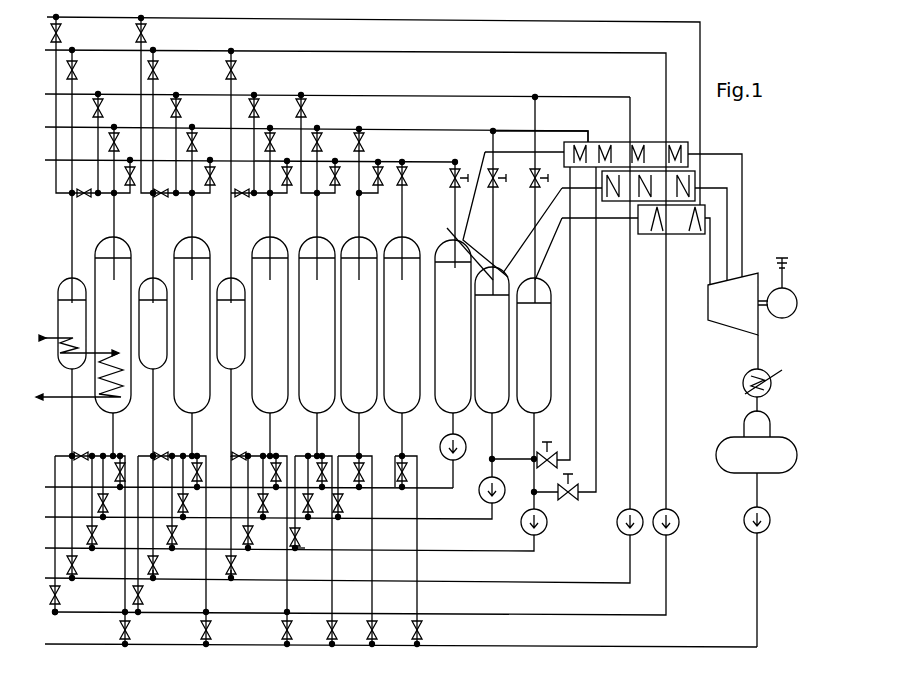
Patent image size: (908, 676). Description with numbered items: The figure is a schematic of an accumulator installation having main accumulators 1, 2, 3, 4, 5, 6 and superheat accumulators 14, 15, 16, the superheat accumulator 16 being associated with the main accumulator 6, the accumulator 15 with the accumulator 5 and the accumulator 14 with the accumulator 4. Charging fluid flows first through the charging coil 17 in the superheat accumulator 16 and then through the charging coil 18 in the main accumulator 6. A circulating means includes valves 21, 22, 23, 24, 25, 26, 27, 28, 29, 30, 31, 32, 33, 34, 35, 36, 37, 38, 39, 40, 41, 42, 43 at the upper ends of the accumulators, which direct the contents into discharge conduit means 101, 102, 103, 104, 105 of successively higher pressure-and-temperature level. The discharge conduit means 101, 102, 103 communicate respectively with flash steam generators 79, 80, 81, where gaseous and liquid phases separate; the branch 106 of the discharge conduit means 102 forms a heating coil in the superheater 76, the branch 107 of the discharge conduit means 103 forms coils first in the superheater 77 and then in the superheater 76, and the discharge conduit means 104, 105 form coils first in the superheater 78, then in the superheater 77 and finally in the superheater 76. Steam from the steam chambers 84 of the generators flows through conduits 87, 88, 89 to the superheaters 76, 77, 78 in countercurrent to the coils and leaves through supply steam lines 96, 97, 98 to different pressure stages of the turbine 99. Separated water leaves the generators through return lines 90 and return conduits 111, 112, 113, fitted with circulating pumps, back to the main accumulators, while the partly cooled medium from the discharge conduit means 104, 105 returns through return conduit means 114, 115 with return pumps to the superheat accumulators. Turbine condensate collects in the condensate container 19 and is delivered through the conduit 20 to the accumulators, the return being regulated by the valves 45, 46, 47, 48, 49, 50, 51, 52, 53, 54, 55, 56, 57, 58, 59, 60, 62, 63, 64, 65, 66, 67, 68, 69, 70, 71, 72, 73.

The main accumulator 1 is at (402, 316).
The main accumulator 2 is at (360, 316).
The main accumulator 3 is at (318, 316).
The main accumulator 4 is at (264, 316).
The main accumulator 5 is at (188, 310).
The main accumulator 6 is at (108, 310).
The superheat accumulator 14 is at (232, 323).
The superheat accumulator 15 is at (153, 323).
The superheat accumulator 16 is at (68, 284).
The charging coil 17 is at (79, 323).
The charging coil 18 is at (112, 348).
The condensate container 19 is at (728, 452).
The conduit 20 is at (744, 648).
The valve 21 is at (404, 167).
The valve 22 is at (360, 133).
The valve 23 is at (304, 103).
The valve 24 is at (244, 71).
The valve 25 is at (146, 33).
The valve 26 is at (379, 167).
The valve 27 is at (318, 133).
The valve 28 is at (258, 103).
The valve 29 is at (249, 206).
The valve 30 is at (158, 70).
The valve 31 is at (77, 70).
The valve 32 is at (336, 167).
The valve 33 is at (272, 135).
The valve 34 is at (180, 103).
The valve 35 is at (170, 206).
The valve 36 is at (61, 33).
The valve 37 is at (288, 167).
The valve 38 is at (195, 135).
The valve 39 is at (101, 103).
The valve 40 is at (86, 198).
The valve 41 is at (210, 167).
The valve 42 is at (117, 134).
The valve 43 is at (130, 167).
The valve 45 is at (400, 482).
The valve 46 is at (342, 505).
The valve 47 is at (297, 550).
The valve 48 is at (230, 572).
The valve 49 is at (143, 595).
The valve 50 is at (403, 632).
The valve 51 is at (362, 463).
The valve 52 is at (311, 503).
The valve 53 is at (257, 518).
The valve 54 is at (241, 454).
The valve 55 is at (156, 572).
The valve 56 is at (60, 595).
The valve 57 is at (359, 632).
The valve 58 is at (323, 463).
The valve 59 is at (264, 518).
The valve 60 is at (177, 518).
The valve 62 is at (77, 571).
The valve 63 is at (318, 632).
The valve 64 is at (277, 463).
The valve 65 is at (184, 518).
The valve 66 is at (95, 518).
The valve 67 is at (82, 454).
The valve 68 is at (272, 632).
The valve 69 is at (199, 463).
The valve 70 is at (108, 518).
The valve 71 is at (194, 632).
The valve 72 is at (122, 463).
The valve 73 is at (110, 632).
The superheater 76 is at (686, 142).
The superheater 77 is at (612, 203).
The superheater 78 is at (671, 234).
The flash steam generator 79 is at (458, 310).
The flash steam generator 80 is at (494, 337).
The steam generator 81 is at (536, 337).
The steam chamber 84 is at (460, 246).
The conduit 87 is at (470, 208).
The conduit 88 is at (548, 205).
The conduit 89 is at (556, 230).
The return line 90 is at (532, 445).
The supply steam line 96 is at (740, 263).
The supply steam line 97 is at (727, 257).
The supply steam line 98 is at (710, 273).
The turbine 99 is at (708, 316).
The discharge conduit means 101 is at (456, 169).
The discharge conduit means 102 is at (455, 130).
The discharge conduit means 103 is at (517, 99).
The discharge conduit means 104 is at (642, 55).
The discharge conduit means 105 is at (655, 24).
The branch 106 is at (556, 131).
The branch 107 is at (598, 99).
The return conduit 111 is at (430, 490).
The return conduit 112 is at (419, 520).
The return conduit 113 is at (518, 551).
The return conduit means 114 is at (618, 580).
The return conduit means 115 is at (656, 608).